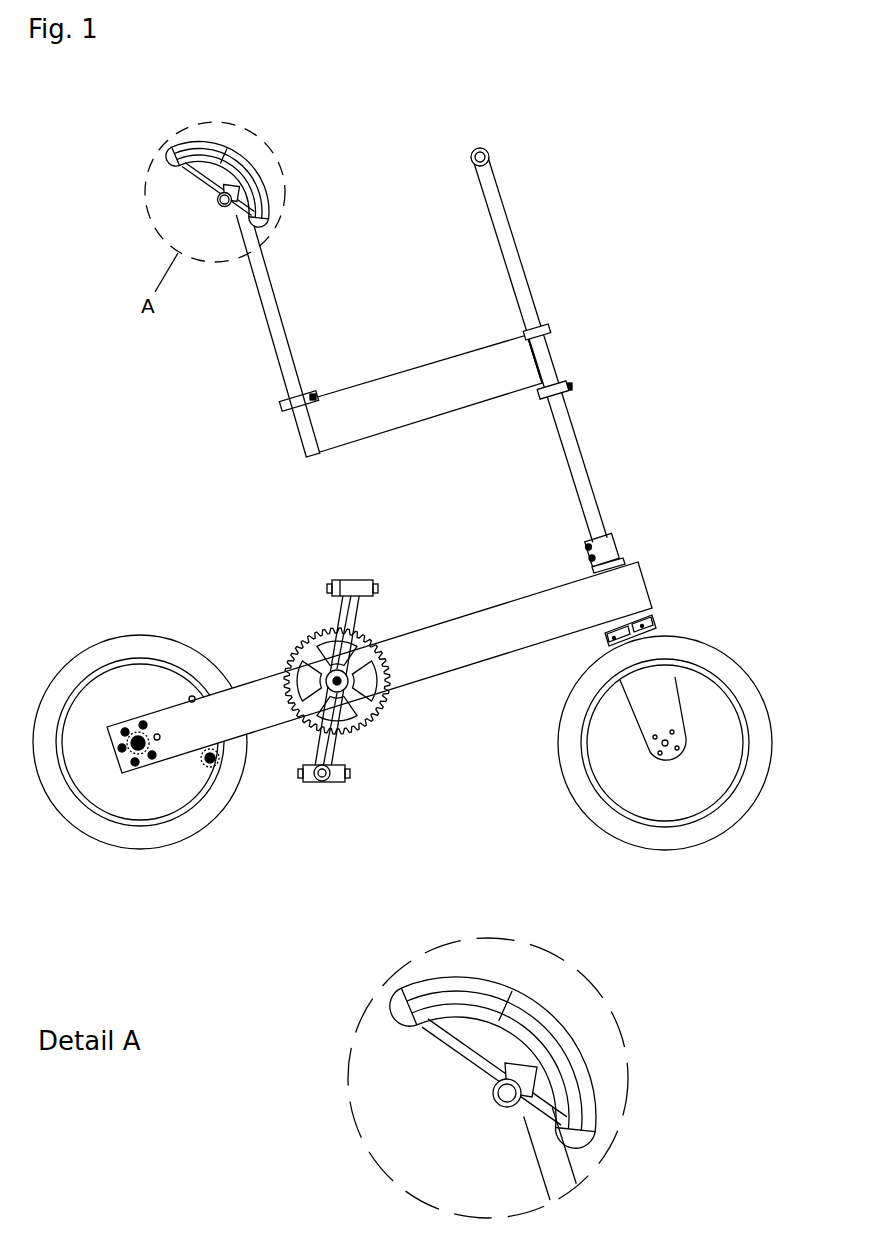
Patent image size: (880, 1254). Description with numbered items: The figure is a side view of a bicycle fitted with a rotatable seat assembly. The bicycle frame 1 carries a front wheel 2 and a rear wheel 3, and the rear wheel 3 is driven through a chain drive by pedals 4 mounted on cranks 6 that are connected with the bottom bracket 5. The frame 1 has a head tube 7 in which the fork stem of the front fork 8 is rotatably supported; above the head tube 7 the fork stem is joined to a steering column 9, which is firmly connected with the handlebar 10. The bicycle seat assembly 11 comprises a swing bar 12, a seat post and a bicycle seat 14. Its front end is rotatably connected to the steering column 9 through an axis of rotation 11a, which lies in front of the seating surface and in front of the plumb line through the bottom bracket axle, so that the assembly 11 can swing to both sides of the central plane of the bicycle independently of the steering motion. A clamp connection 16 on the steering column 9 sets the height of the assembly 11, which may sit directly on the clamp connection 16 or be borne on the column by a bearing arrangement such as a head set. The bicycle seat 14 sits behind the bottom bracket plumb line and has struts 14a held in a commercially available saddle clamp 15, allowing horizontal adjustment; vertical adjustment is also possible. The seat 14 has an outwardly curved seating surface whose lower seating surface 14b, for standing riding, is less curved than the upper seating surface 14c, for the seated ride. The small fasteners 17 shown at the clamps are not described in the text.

The bicycle frame 1 is at (483, 630).
The front wheel 2 is at (694, 652).
The rear wheel 3 is at (118, 650).
The pedals 4 is at (356, 589).
The bottom bracket 5 is at (340, 683).
The cranks 6 is at (350, 625).
The head tube 7 is at (617, 585).
The front fork 8 is at (655, 700).
The steering column 9 is at (508, 245).
The handlebar 10 is at (490, 156).
The bicycle seat assembly 11 is at (334, 339).
The axis of rotation 11a is at (528, 337).
The swing bar 12 is at (420, 400).
The bicycle seat 14 is at (178, 163).
The struts 14a is at (458, 1043).
The lower seating surface 14b is at (585, 1082).
The upper seating surface 14c is at (483, 980).
The saddle clamp 15 is at (503, 1095).
The clamp connection 16 is at (563, 388).
The clamp fasteners 17 is at (543, 327).